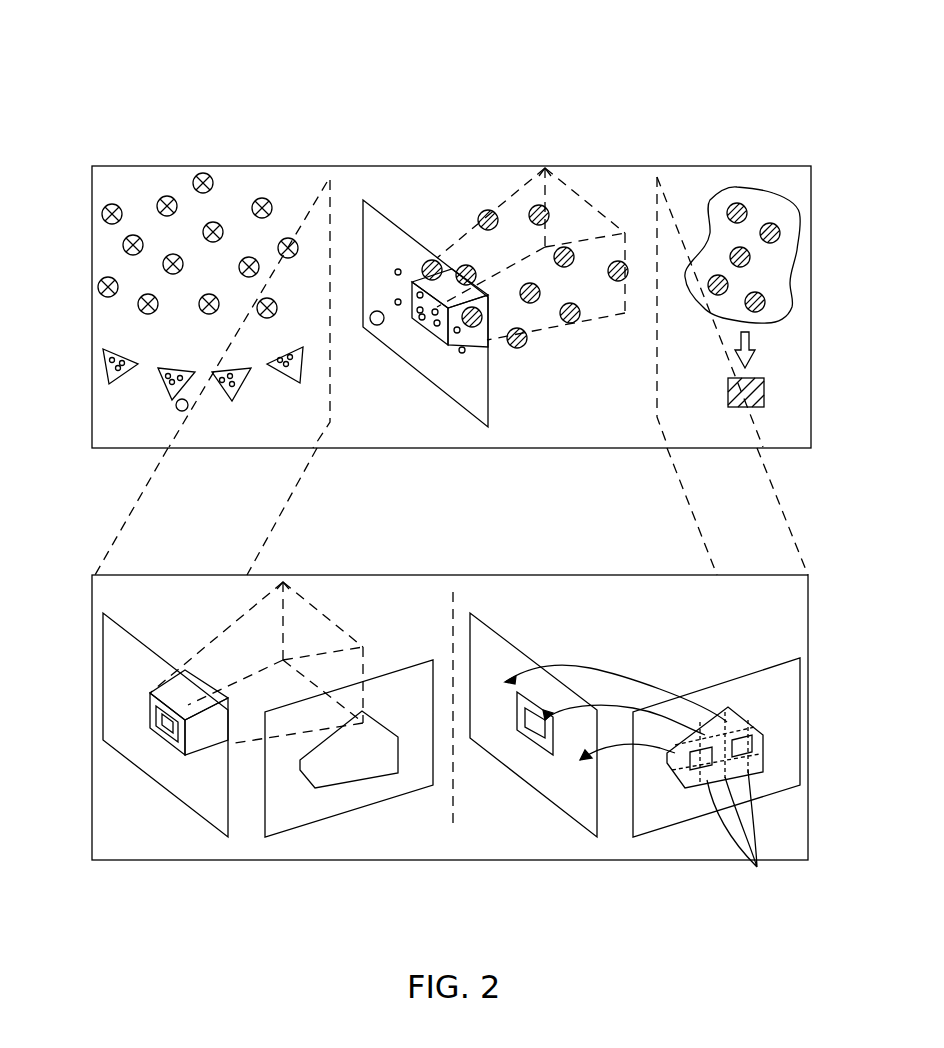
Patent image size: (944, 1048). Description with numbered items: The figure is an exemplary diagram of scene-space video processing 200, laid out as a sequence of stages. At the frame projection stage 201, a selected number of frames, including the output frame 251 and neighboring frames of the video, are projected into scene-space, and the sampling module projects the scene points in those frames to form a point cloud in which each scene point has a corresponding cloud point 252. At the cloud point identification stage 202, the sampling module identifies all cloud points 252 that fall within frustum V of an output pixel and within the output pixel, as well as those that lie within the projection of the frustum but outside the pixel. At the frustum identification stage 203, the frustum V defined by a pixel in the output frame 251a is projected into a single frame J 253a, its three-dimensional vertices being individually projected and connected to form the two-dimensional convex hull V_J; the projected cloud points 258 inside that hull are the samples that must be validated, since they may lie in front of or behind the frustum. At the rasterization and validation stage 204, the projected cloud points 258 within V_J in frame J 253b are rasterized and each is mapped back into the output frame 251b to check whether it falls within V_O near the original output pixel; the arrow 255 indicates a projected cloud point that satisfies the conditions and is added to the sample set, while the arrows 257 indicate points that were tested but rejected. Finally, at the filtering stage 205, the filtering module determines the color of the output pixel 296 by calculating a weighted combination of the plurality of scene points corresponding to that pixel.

The scene-space video processing diagram 200 is at (128, 76).
The frame projection stage 201 is at (222, 449).
The cloud point identification stage 202 is at (510, 448).
The frustum identification stage 203 is at (252, 860).
The rasterization and validation stage 204 is at (598, 860).
The filtering stage 205 is at (727, 448).
The output frame 251 is at (172, 393).
The output frame 251a is at (170, 793).
The output frame 251b is at (527, 783).
The cloud point 252 is at (256, 200).
The single frame J 253a is at (335, 815).
The single frame J 253b is at (670, 825).
The arrow indicating accepted projected cloud point 255 is at (625, 708).
The arrows indicating rejected projected cloud points 257 is at (613, 743).
The projected cloud points 258 is at (745, 835).
The output pixel 296 is at (764, 392).